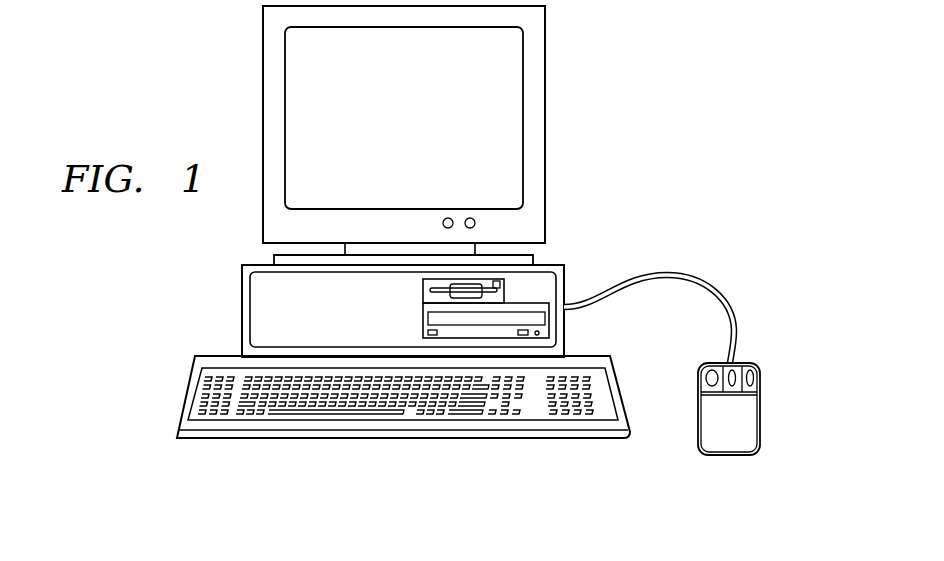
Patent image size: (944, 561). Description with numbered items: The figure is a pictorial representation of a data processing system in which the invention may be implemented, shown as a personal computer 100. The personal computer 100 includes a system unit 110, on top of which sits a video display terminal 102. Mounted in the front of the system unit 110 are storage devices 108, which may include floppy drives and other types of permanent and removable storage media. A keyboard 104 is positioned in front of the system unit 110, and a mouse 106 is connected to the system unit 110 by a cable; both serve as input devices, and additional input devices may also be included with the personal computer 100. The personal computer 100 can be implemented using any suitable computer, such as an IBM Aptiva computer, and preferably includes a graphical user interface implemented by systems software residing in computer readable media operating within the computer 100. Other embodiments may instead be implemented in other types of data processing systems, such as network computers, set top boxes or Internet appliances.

The personal computer 100 is at (719, 91).
The video display terminal 102 is at (546, 114).
The keyboard 104 is at (183, 393).
The mouse 106 is at (760, 410).
The storage devices 108 is at (423, 314).
The system unit 110 is at (241, 310).